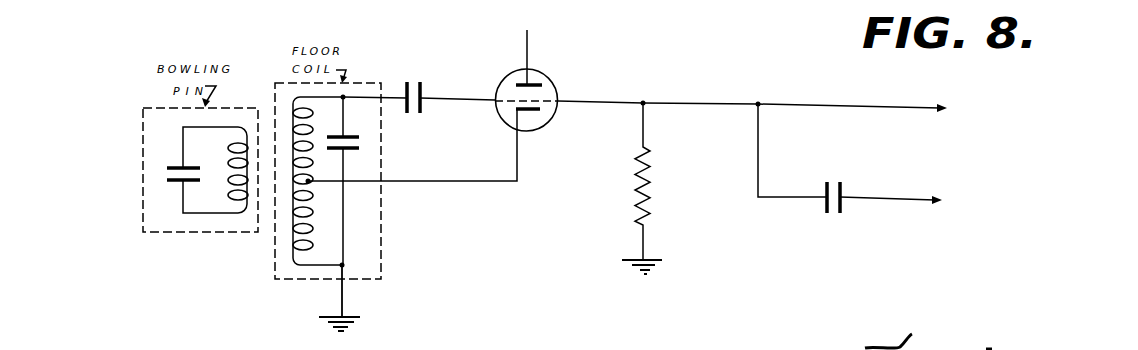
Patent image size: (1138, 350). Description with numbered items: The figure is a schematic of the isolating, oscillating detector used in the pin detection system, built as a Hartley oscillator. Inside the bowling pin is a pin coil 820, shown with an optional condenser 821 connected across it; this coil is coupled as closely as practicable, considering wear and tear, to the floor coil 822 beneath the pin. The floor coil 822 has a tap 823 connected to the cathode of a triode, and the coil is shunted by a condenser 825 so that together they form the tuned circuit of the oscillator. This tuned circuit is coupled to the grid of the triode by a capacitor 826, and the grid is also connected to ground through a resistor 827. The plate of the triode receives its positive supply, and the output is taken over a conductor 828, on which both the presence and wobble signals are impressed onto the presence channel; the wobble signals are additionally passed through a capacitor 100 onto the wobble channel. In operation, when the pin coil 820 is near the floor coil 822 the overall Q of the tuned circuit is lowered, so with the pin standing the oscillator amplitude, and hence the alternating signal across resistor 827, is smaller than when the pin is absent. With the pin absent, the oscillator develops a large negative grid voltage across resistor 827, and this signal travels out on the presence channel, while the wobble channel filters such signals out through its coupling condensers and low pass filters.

The pin coil 820 is at (218, 213).
The condenser 821 is at (190, 168).
The floor coil 822 is at (304, 225).
The tap 823 is at (538, 129).
The condenser 825 is at (360, 142).
The capacitor 826 is at (409, 82).
The resistor 827 is at (651, 187).
The conductor 828 is at (835, 82).
The capacitor 100 is at (831, 182).